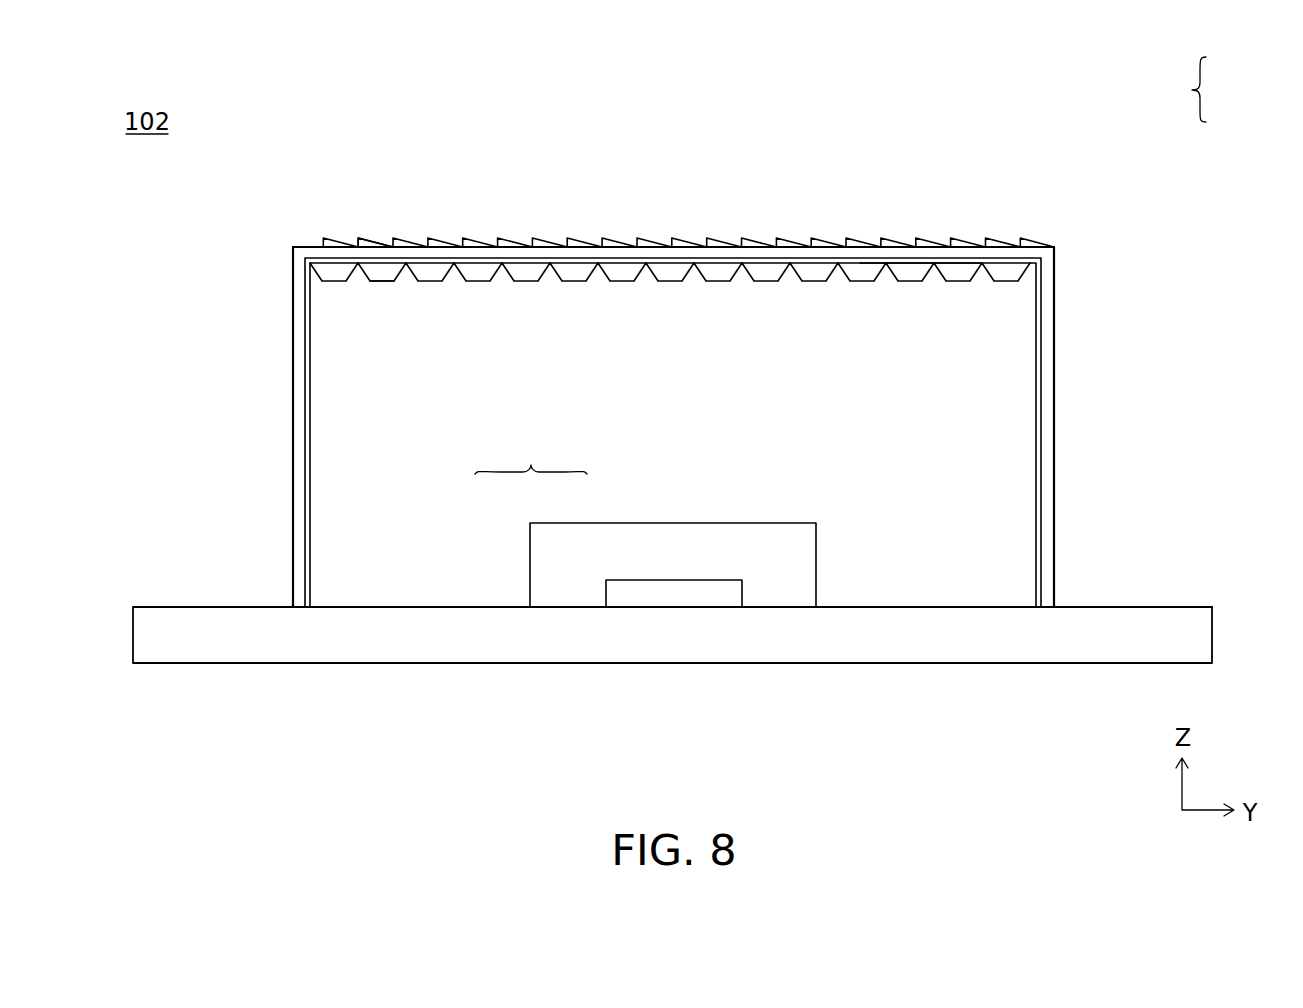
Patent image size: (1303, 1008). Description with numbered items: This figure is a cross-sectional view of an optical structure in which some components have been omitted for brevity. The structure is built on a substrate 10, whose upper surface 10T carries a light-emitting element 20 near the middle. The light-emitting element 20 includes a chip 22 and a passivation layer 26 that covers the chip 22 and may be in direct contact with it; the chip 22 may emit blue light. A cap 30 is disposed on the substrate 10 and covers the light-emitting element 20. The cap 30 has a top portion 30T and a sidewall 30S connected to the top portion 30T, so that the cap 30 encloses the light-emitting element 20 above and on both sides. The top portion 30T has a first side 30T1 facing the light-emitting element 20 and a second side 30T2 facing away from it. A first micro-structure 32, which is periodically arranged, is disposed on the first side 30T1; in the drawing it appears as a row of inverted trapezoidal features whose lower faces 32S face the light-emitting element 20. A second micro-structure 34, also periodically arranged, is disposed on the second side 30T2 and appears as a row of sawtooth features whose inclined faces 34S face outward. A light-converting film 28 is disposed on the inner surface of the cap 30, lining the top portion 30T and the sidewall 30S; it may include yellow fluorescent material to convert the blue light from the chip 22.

The substrate 10 is at (147, 633).
The top surface of substrate 10T is at (1127, 607).
The light-emitting element 20 is at (645, 521).
The chip 22 is at (617, 587).
The passivation layer 26 is at (548, 567).
The light-converting film 28 is at (305, 543).
The cap 30 is at (1205, 90).
The sidewall 30S is at (1048, 452).
The top portion 30T is at (975, 255).
The first side 30T1 is at (915, 263).
The second side 30T2 is at (1040, 247).
The first micro-structure 32 is at (570, 293).
The surface of inner structure 32S is at (385, 283).
The second micro-structure 34 is at (513, 236).
The surface of outer fin 34S is at (362, 238).